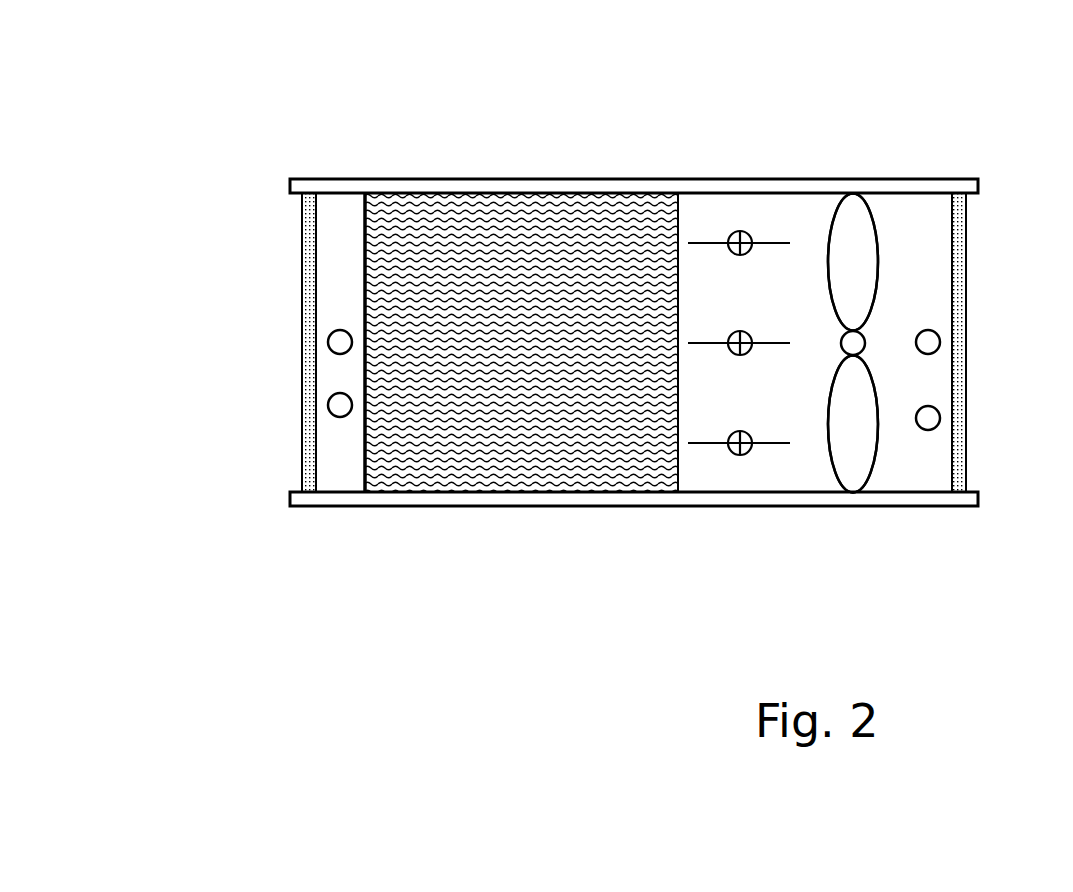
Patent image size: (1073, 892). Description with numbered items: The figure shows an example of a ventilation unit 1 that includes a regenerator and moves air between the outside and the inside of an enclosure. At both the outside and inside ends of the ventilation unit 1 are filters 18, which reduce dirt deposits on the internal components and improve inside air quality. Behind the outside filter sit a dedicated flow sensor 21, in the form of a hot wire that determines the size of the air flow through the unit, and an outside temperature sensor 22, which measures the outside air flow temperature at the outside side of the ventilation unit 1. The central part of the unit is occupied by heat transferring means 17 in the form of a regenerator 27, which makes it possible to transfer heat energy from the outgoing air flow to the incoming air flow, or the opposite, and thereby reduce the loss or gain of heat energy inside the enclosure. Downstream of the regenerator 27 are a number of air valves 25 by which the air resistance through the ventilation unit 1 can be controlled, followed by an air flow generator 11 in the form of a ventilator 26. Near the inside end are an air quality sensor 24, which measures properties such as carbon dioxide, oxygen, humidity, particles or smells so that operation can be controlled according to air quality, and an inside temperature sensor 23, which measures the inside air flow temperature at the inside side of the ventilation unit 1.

The ventilation unit 1 is at (300, 127).
The filters 18 is at (302, 470).
The heat transferring means 17 is at (528, 430).
The regenerator 27 is at (521, 342).
The flow sensor 21 is at (328, 342).
The outside temperature sensor 22 is at (328, 406).
The air valves 25 is at (740, 467).
The air flow generator 11 is at (852, 443).
The ventilator 26 is at (853, 343).
The air quality sensor 24 is at (940, 342).
The inside temperature sensor 23 is at (940, 418).